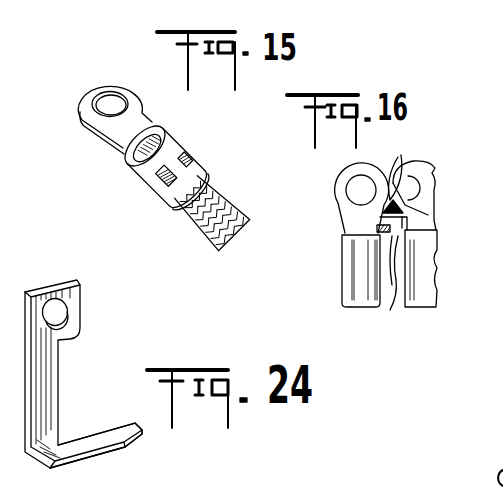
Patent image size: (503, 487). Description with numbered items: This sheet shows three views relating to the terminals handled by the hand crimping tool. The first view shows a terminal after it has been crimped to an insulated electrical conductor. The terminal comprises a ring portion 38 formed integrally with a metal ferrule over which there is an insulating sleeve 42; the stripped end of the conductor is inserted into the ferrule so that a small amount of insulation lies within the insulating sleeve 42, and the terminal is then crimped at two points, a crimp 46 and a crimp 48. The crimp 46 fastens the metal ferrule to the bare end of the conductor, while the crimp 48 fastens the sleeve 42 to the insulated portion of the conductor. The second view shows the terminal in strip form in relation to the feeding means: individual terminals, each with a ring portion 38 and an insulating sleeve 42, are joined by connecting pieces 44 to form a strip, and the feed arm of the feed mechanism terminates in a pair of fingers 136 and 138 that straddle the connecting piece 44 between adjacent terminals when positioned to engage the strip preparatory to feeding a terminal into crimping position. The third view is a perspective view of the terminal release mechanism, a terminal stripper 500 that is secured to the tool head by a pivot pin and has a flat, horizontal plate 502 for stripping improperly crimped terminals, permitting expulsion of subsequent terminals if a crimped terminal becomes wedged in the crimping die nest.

In FIG. 15, the ring portion 38 is at (80, 106).
In FIG. 16, the ring portion 38 is at (340, 182).
In FIG. 15, the insulating sleeve 42 is at (140, 168).
In FIG. 16, the insulating sleeve 42 is at (355, 270).
In FIG. 16, the connecting piece 44 is at (420, 206).
In FIG. 15, the crimp 46 is at (160, 130).
In FIG. 15, the crimp 48 is at (190, 159).
In FIG. 16, the finger 136 is at (401, 170).
In FIG. 16, the finger 138 is at (392, 246).
In FIG. 24, the terminal stripper 500 is at (43, 368).
In FIG. 24, the flat horizontal plate 502 is at (100, 439).